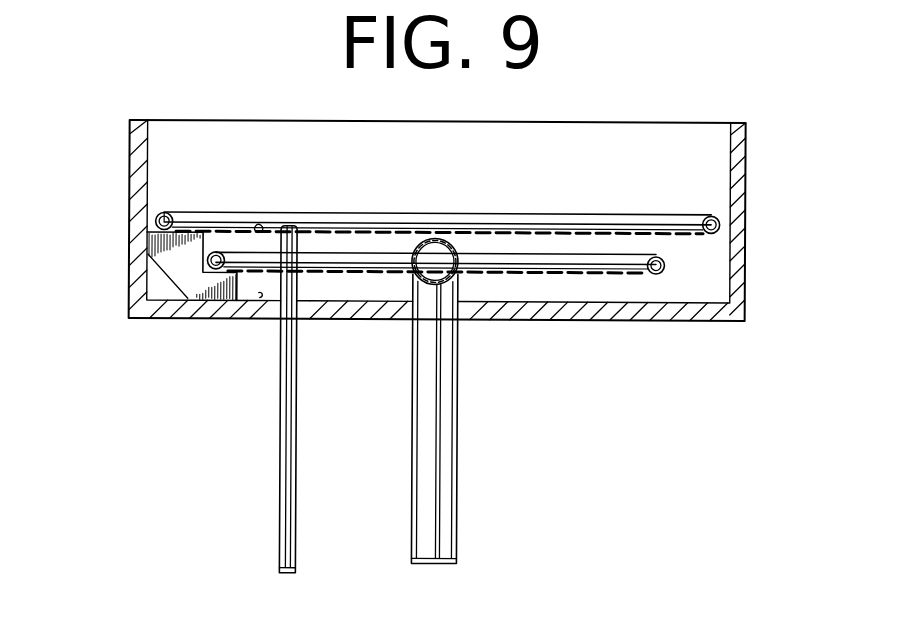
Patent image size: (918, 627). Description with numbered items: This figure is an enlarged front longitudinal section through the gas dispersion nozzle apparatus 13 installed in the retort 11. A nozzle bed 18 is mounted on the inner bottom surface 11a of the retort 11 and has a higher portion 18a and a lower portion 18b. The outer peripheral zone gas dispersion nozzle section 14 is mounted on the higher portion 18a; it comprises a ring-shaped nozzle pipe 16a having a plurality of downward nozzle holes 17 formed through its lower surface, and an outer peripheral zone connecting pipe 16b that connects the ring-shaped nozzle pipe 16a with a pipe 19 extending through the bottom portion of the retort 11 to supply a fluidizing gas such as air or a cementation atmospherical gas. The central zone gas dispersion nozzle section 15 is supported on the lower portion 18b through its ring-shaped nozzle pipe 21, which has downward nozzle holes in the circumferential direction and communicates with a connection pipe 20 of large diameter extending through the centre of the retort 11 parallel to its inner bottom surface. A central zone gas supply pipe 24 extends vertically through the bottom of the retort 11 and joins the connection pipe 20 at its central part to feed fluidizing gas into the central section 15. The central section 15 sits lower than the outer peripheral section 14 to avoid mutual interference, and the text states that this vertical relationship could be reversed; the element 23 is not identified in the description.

The retort 11 is at (129, 147).
The inner bottom surface of the retort 11a is at (265, 302).
The gas dispersion nozzle apparatus 13 is at (372, 206).
The outer peripheral zone gas dispersion nozzle section 14 is at (228, 213).
The central zone gas dispersion nozzle section 15 is at (543, 273).
The ring-shaped nozzle pipe 16a is at (720, 222).
The outer peripheral zone connecting pipe 16b is at (197, 211).
The downward nozzle holes 17 is at (262, 228).
The nozzle bed 18 is at (180, 265).
The higher portion of the nozzle bed 18a is at (154, 221).
The lower portion of the nozzle bed 18b is at (205, 306).
The gas supply pipe 19 is at (298, 491).
The connection pipe of a large diameter 20 is at (448, 236).
The ring-shaped nozzle pipe 21 is at (665, 261).
The lower contact strip 23 is at (637, 273).
The central zone gas supply pipe 24 is at (459, 486).